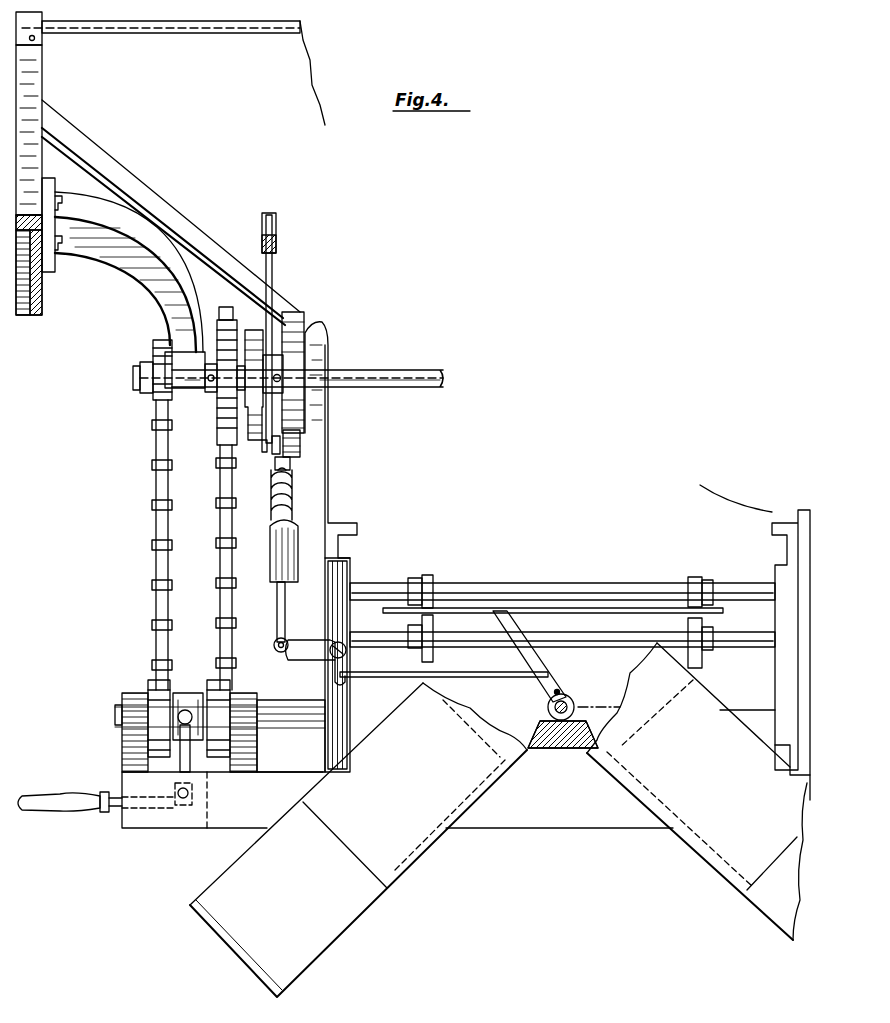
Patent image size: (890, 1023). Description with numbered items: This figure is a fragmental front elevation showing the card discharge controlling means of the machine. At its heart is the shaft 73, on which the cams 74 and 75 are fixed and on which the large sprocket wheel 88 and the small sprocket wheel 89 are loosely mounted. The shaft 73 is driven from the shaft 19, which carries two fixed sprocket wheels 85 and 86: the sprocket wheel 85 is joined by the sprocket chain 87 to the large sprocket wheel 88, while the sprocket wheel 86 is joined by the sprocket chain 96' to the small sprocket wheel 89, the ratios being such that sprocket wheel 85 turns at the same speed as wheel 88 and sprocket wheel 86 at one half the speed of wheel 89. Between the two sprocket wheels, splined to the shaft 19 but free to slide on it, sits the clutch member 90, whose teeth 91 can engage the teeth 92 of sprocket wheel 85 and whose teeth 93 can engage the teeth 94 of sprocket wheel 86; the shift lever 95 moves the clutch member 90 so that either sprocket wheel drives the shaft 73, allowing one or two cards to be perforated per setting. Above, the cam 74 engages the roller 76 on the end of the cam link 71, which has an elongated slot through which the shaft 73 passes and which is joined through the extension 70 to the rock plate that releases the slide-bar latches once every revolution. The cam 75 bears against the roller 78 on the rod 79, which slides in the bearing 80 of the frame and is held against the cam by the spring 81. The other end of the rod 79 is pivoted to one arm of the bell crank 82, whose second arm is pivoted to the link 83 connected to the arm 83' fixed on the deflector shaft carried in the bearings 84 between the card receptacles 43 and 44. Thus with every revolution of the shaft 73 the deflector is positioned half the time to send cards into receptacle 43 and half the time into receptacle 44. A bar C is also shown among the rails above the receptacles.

The shaft 19 is at (298, 720).
The card receptacle 43 is at (358, 840).
The card receptacle 44 is at (697, 791).
The extension 70 is at (277, 231).
The cam link 71 is at (273, 273).
The shaft 73 is at (366, 372).
The cam 74 is at (249, 410).
The cam 75 is at (297, 334).
The roller 76 is at (264, 448).
The roller 78 is at (300, 437).
The rod 79 is at (286, 616).
The bearing 80 is at (299, 526).
The spring 81 is at (290, 480).
The bell crank 82 is at (306, 650).
The link 83 is at (444, 685).
The arm 83' is at (541, 656).
The bearing 84 is at (577, 701).
The sprocket wheel 85 is at (213, 684).
The sprocket wheel 86 is at (150, 686).
The sprocket chain 87 is at (218, 510).
The large sprocket wheel 88 is at (220, 302).
The small sprocket wheel 89 is at (148, 388).
The clutch member 90 is at (193, 680).
The teeth 91 is at (181, 746).
The teeth 92 is at (206, 745).
The teeth 93 is at (162, 709).
The teeth 94 is at (160, 729).
The shift lever 95 is at (115, 806).
The sprocket chain 96' is at (136, 545).
The bar C is at (640, 608).